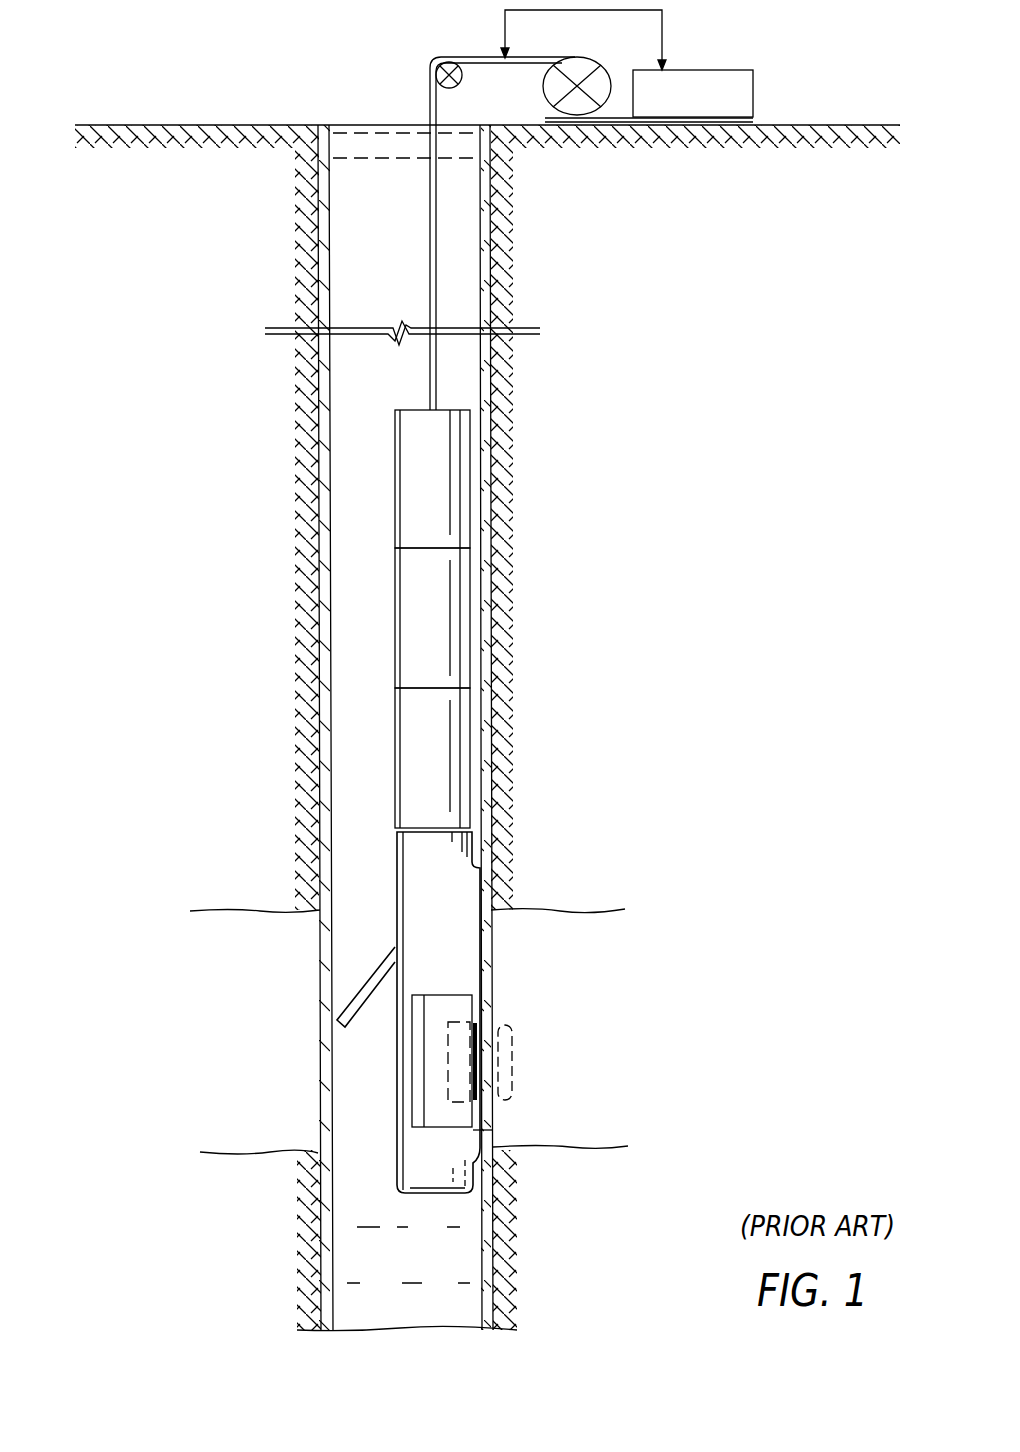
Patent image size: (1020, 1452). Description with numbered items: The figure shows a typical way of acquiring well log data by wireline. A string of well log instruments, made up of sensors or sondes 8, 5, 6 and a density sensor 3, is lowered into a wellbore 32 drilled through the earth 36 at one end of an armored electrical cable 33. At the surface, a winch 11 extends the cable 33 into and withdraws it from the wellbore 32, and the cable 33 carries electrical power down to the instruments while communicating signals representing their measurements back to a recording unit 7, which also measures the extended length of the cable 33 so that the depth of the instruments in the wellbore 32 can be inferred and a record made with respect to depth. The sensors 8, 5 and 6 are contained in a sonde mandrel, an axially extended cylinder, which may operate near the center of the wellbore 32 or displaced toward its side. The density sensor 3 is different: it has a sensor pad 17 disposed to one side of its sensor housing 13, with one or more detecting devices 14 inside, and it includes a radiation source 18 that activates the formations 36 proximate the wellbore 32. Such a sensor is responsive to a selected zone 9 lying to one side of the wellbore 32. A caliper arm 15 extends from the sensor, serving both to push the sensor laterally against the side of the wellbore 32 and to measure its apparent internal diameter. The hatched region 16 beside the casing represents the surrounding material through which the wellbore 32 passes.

The density sensor 3 is at (377, 938).
The sensor 5 is at (453, 627).
The sensor 6 is at (410, 742).
The recording unit 7 is at (680, 106).
The sensor 8 is at (410, 472).
The selected zone 9 is at (505, 1022).
The winch 11 is at (590, 60).
The sensor housing 13 is at (394, 1161).
The detecting device 14 is at (478, 1132).
The caliper arm 15 is at (350, 1000).
The formation 16 is at (305, 540).
The sensor pad 17 is at (402, 1079).
The radiation source 18 is at (478, 1106).
The wellbore 32 is at (350, 145).
The armored electrical cable 33 is at (428, 100).
The earth 36 is at (612, 528).